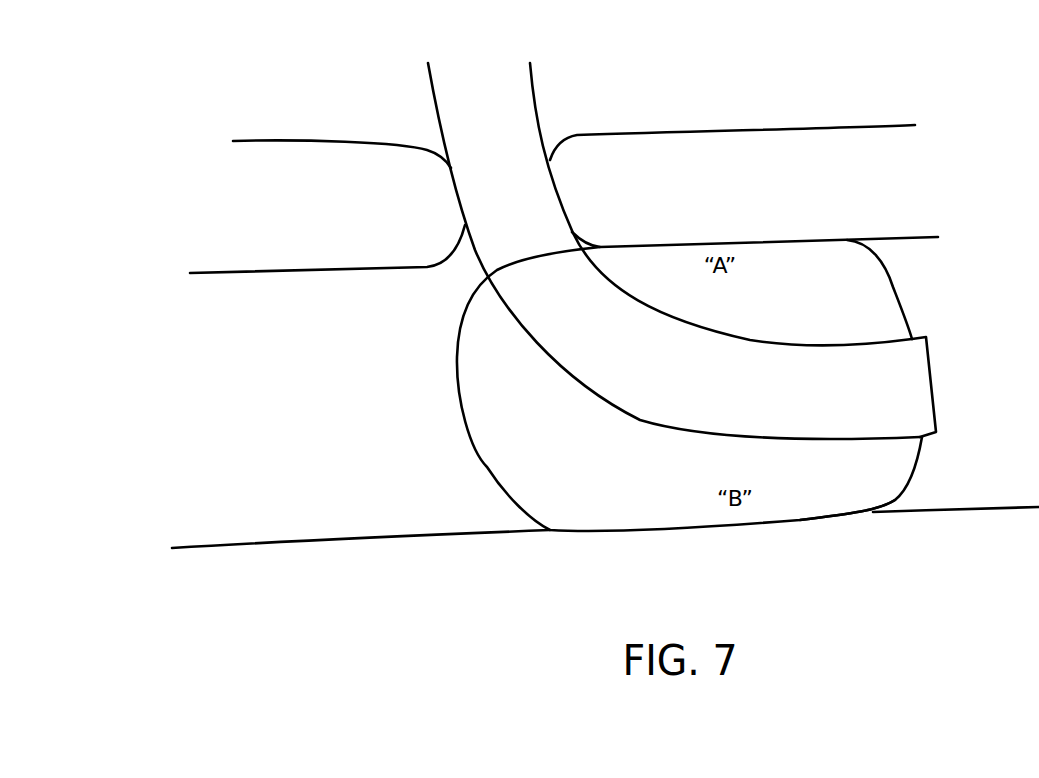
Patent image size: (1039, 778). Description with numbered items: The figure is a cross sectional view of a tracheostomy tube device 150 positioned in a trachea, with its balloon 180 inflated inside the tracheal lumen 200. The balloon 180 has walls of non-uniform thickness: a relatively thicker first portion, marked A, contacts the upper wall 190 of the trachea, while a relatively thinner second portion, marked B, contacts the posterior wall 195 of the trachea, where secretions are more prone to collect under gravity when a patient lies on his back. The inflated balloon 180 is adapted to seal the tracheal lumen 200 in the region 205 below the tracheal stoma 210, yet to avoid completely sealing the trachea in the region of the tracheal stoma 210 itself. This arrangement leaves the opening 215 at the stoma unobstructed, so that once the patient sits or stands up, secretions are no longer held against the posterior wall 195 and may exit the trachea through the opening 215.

The tracheostomy tube device 150 is at (754, 99).
The tracheal stoma 210 is at (552, 137).
The upper wall of the trachea 190 is at (797, 237).
The balloon 180 is at (719, 385).
The opening 215 is at (456, 266).
The posterior wall of the trachea 195 is at (852, 530).
The tracheal lumen 200 is at (282, 427).
The region below the tracheal stoma 205 is at (1022, 465).